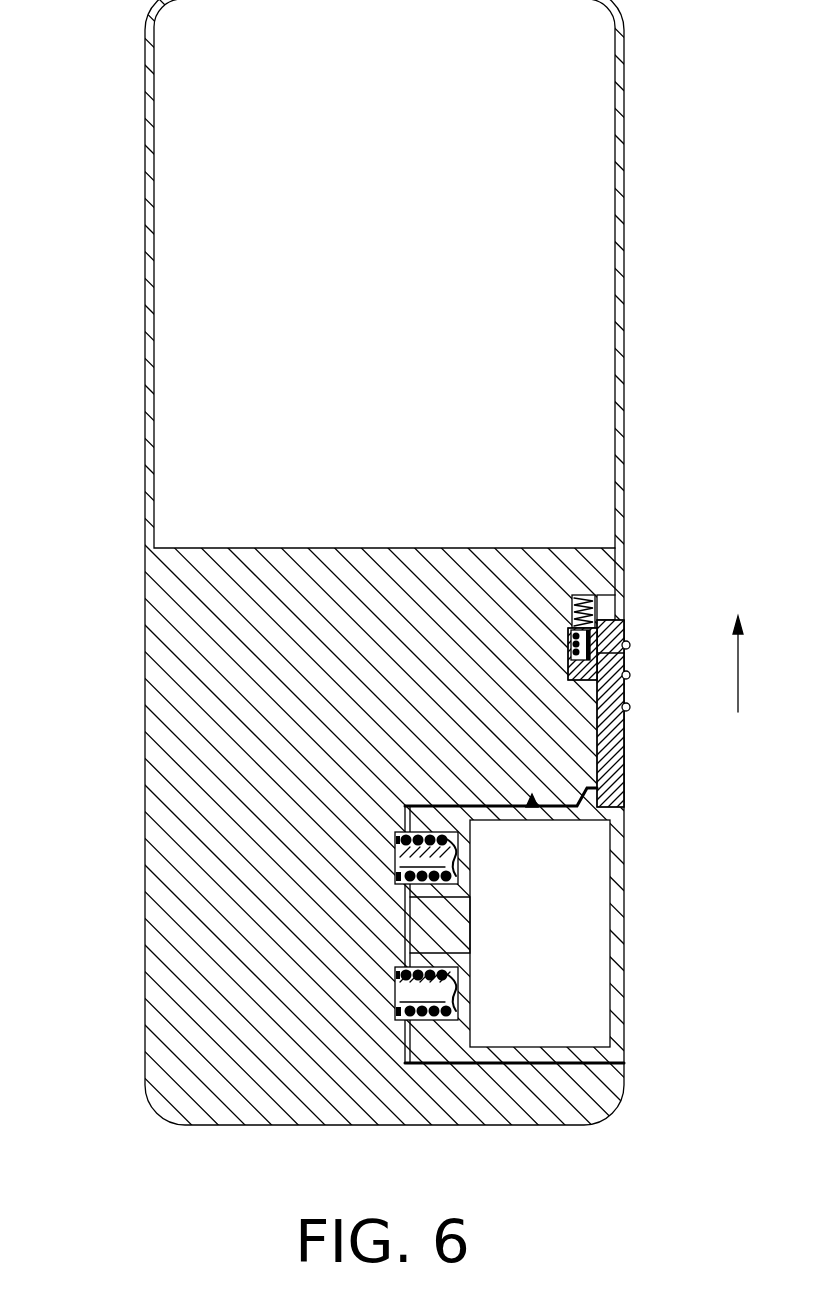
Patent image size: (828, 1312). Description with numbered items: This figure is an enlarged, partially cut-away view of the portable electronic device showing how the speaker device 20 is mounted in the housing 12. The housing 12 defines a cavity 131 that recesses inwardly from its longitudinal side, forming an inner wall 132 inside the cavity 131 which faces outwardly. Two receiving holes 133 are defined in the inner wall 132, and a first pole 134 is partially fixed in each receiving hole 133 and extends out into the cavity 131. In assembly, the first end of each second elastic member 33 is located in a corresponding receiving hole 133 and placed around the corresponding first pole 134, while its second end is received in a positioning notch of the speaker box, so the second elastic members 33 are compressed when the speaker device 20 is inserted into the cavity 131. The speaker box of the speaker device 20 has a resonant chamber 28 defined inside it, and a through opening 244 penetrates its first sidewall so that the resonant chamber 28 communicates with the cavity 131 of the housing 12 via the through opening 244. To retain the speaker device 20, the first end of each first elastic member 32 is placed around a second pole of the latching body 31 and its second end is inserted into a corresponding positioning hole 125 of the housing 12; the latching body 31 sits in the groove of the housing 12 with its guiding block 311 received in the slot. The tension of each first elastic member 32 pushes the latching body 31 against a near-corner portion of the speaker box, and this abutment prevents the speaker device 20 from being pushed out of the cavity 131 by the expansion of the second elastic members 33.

The housing 12 is at (178, 694).
The speaker device 20 is at (535, 797).
The resonant chamber 28 is at (577, 912).
The latching body 31 is at (617, 738).
The guiding block 311 is at (600, 668).
The first elastic member 32 is at (588, 606).
The second elastic member 33 is at (452, 921).
The positioning hole 125 is at (606, 629).
The cavity 131 is at (396, 831).
The inner wall 132 is at (395, 1045).
The receiving hole 133 is at (395, 873).
The first pole 134 is at (438, 867).
The through opening 244 is at (409, 895).